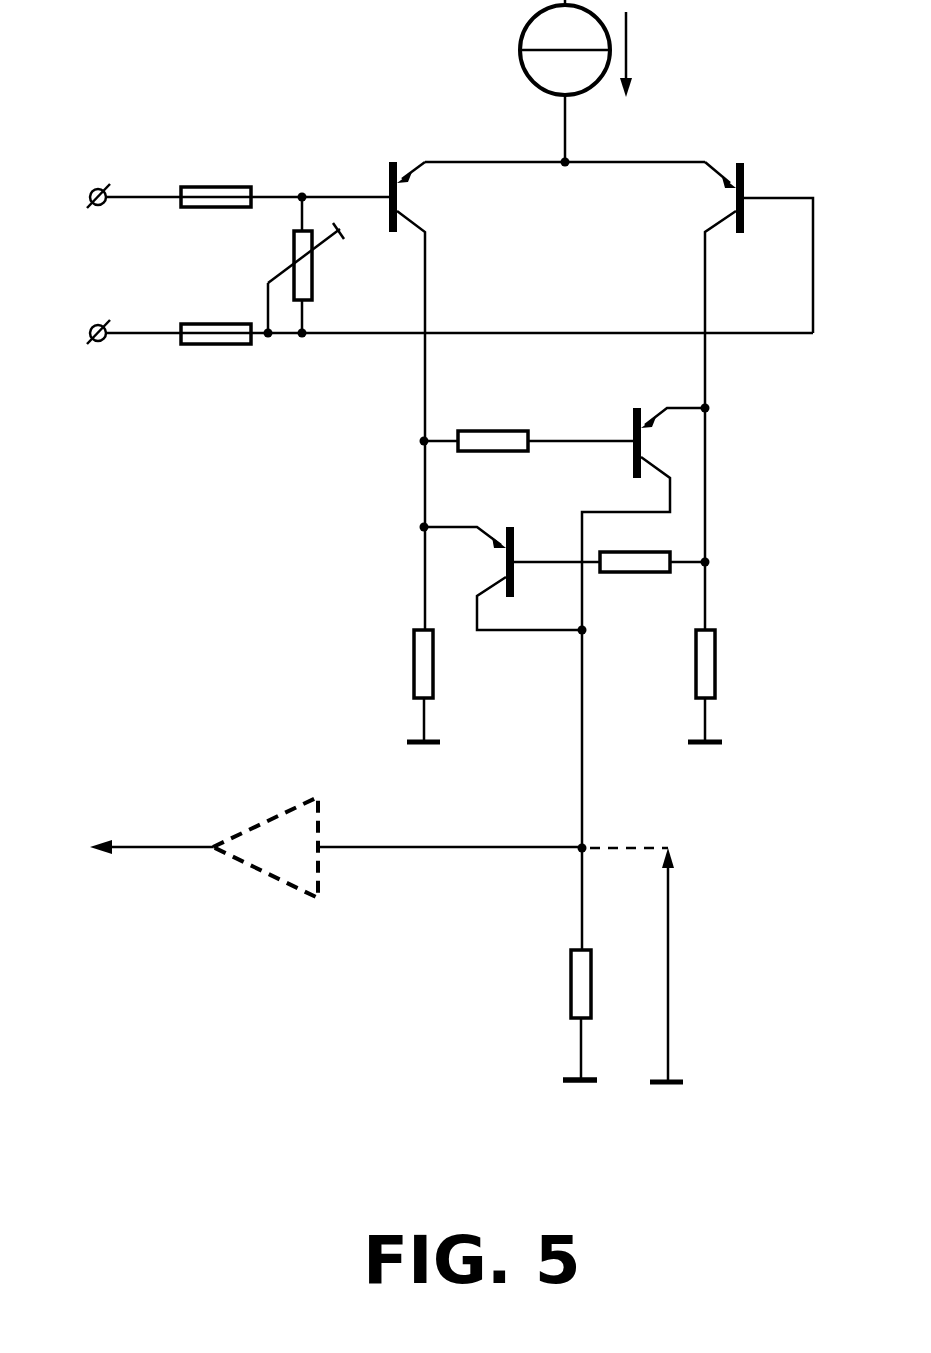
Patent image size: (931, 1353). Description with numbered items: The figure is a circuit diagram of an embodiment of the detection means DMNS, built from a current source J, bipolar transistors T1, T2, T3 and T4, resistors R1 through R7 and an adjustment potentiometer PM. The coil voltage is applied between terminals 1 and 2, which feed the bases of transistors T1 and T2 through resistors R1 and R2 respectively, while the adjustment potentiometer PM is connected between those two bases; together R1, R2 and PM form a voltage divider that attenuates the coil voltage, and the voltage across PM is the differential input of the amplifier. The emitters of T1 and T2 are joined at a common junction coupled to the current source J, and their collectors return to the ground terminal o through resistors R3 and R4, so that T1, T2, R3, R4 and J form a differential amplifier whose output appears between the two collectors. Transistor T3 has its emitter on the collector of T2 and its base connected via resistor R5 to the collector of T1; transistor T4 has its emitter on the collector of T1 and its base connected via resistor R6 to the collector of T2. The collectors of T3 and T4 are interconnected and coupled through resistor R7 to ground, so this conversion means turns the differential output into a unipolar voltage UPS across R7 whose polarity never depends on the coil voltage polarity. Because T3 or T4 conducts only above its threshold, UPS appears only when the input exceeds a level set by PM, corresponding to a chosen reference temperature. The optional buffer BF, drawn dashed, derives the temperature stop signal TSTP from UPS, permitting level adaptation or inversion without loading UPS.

The terminal 1 is at (98, 207).
The terminal 2 is at (98, 343).
The resistor R1 is at (222, 186).
The resistor R2 is at (223, 345).
The adjustment potentiometer PM is at (313, 272).
The current source J is at (520, 62).
The transistor T1 is at (408, 198).
The transistor T2 is at (728, 197).
The transistor T3 is at (663, 417).
The transistor T4 is at (499, 543).
The resistor R3 is at (419, 662).
The resistor R4 is at (708, 663).
The resistor R5 is at (497, 431).
The resistor R6 is at (638, 573).
The resistor R7 is at (570, 982).
The buffer BF is at (287, 888).
The temperature stop signal TSTP is at (148, 850).
The unipolar voltage UPS is at (672, 968).
The terminal 0 (ground) o is at (577, 1078).
The detection means DMNS is at (468, 1152).